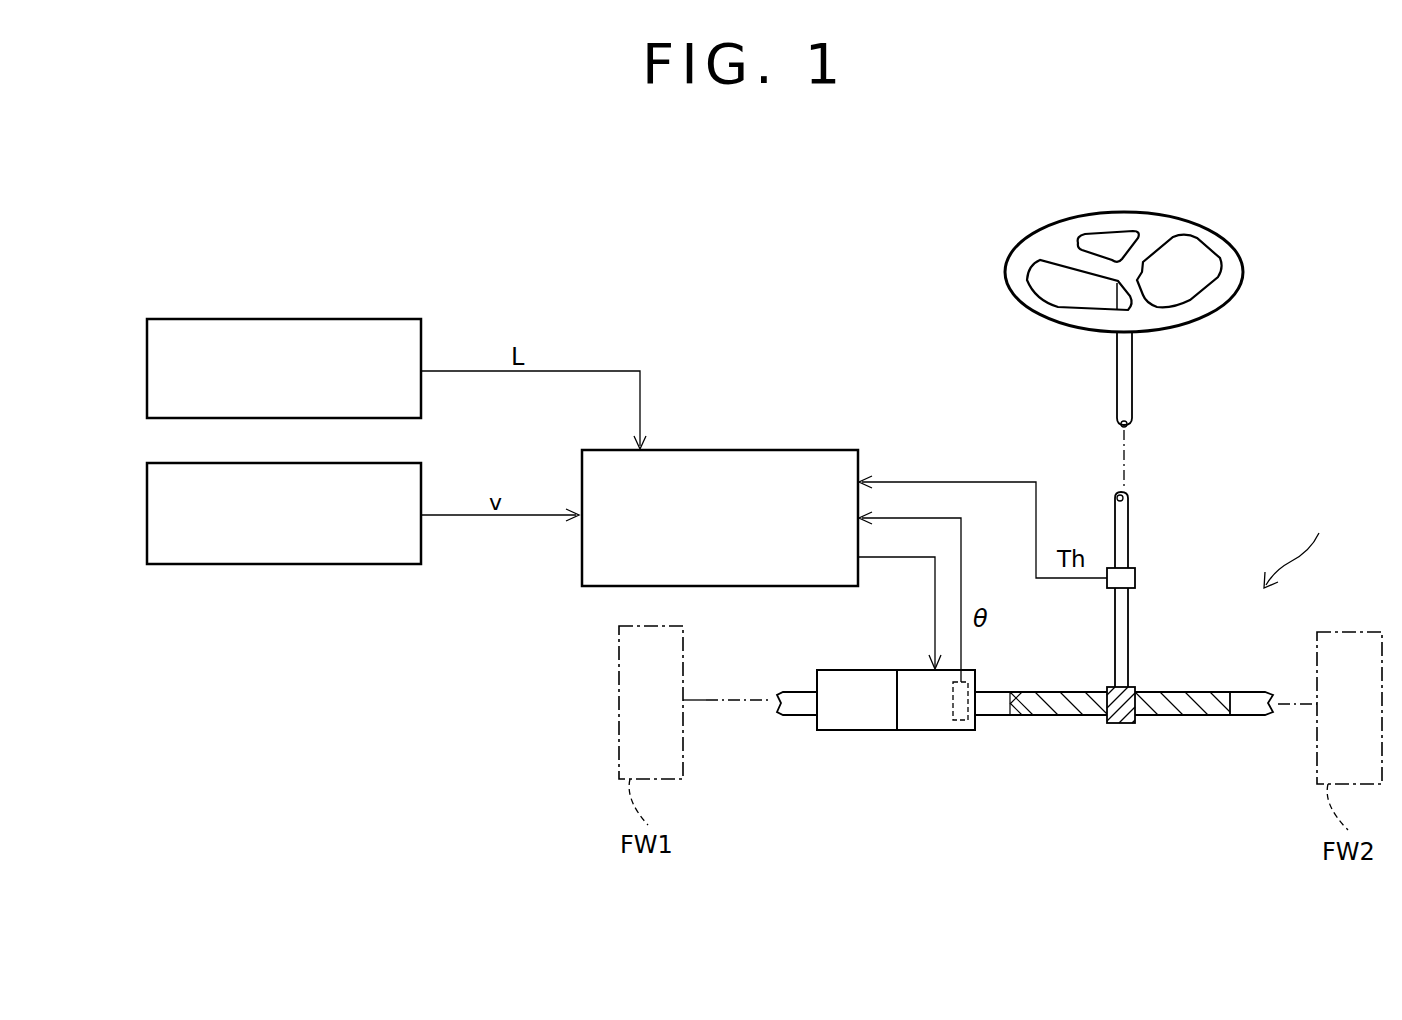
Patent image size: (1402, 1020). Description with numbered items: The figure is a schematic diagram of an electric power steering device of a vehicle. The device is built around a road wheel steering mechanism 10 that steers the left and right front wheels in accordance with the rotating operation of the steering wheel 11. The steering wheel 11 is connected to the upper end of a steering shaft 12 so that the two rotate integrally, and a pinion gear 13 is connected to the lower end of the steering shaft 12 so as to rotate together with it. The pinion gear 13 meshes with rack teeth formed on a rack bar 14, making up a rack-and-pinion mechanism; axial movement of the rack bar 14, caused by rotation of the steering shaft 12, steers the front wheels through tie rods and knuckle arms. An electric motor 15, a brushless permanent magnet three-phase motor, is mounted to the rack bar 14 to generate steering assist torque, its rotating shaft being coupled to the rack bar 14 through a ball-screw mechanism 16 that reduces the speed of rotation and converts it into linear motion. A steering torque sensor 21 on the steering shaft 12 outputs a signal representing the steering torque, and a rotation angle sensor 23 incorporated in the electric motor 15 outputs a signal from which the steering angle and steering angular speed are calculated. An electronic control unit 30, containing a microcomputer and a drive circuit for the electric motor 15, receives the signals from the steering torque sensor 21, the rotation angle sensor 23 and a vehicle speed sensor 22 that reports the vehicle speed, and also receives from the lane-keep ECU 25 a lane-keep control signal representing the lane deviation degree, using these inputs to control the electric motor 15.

The road wheel steering mechanism 10 is at (1300, 545).
The steering wheel 11 is at (1243, 258).
The steering shaft 12 is at (1133, 373).
The pinion gear 13 is at (1121, 723).
The rack bar 14 is at (1210, 692).
The electric motor 15 is at (906, 670).
The ball-screw mechanism 16 is at (857, 670).
The steering torque sensor 21 is at (1137, 578).
The vehicle speed sensor 22 is at (345, 463).
The rotation angle sensor 23 is at (960, 722).
The lane-keep ECU 25 is at (345, 319).
The electronic control unit 30 is at (755, 450).